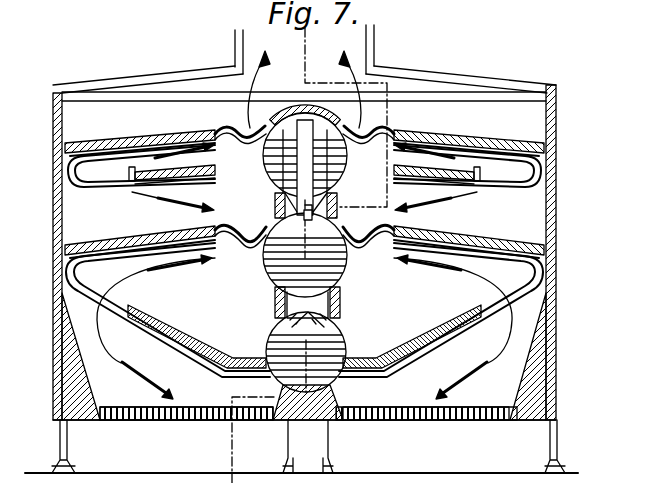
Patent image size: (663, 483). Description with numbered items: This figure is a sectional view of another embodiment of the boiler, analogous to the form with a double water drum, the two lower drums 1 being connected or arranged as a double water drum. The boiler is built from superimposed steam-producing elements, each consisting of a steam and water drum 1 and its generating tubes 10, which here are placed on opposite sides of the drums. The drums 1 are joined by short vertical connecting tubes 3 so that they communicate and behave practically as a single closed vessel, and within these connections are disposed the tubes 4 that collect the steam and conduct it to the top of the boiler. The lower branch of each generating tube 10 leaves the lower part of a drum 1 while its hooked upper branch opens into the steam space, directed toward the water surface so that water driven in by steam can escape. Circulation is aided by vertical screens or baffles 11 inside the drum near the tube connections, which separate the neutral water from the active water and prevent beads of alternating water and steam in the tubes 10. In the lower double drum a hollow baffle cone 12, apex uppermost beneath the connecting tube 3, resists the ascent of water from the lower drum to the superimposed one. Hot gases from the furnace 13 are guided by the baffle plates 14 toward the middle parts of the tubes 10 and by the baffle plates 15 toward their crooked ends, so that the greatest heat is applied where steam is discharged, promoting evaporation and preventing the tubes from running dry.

The steam and water drum 1 is at (263, 266).
The short vertical connecting tube 3 is at (338, 300).
The steam collecting tube 4 is at (296, 156).
The generating tube 10 is at (117, 187).
The vertical screen or baffle 11 is at (328, 150).
The baffle cone 12 is at (326, 320).
The furnace 13 is at (180, 421).
The baffle plate 14 is at (264, 182).
The baffle plate 15 is at (121, 143).